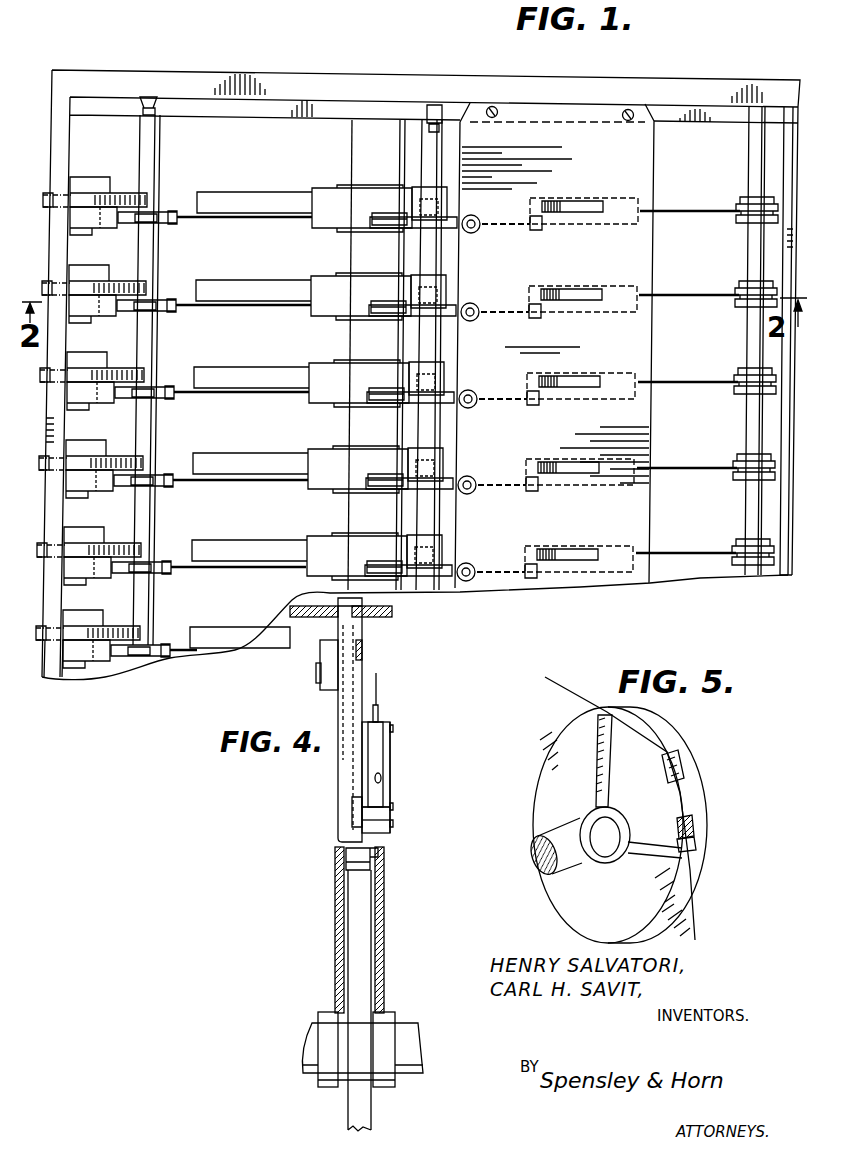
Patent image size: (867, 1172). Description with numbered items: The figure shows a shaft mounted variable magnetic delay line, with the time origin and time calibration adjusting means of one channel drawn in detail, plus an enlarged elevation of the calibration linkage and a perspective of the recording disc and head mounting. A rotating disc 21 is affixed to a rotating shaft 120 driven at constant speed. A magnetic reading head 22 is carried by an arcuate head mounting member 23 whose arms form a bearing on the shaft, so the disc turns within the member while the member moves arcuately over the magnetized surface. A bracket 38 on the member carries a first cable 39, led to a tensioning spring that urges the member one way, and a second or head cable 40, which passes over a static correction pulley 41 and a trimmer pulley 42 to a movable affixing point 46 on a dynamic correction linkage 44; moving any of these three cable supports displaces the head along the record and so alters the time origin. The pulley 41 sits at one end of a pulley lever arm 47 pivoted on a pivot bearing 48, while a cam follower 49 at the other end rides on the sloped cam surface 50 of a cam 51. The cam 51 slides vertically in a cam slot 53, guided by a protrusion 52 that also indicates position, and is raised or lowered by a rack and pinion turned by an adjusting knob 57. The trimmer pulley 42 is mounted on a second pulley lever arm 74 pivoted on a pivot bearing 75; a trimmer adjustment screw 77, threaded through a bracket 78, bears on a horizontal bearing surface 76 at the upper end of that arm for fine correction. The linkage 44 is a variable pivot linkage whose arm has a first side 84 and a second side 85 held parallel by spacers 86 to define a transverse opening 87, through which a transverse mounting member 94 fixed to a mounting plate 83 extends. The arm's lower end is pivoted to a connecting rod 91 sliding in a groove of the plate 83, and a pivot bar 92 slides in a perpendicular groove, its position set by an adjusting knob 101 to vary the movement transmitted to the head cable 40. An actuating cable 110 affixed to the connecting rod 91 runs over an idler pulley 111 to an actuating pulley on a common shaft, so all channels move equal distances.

In FIG. 1, the rotating disc 21 is at (276, 288).
In FIG. 4, the rotating disc 21 is at (360, 946).
In FIG. 5, the rotating disc 21 is at (537, 800).
In FIG. 1, the magnetic reading head 22 is at (440, 292).
In FIG. 4, the magnetic reading head 22 is at (352, 858).
In FIG. 5, the magnetic reading head 22 is at (707, 762).
In FIG. 1, the head mounting member 23 is at (327, 405).
In FIG. 4, the head mounting member 23 is at (385, 884).
In FIG. 5, the head mounting member 23 is at (594, 775).
In FIG. 1, the bracket 38 is at (538, 230).
In FIG. 5, the bracket 38 is at (690, 848).
In FIG. 5, the first cable 39 is at (698, 926).
In FIG. 1, the second cable (head cable) 40 is at (214, 307).
In FIG. 5, the second cable (head cable) 40 is at (577, 700).
In FIG. 1, the static correction pulley 41 is at (176, 395).
In FIG. 1, the trimmer pulley 42 is at (382, 227).
In FIG. 1, the dynamic correction linkage 44 is at (641, 207).
In FIG. 4, the dynamic correction linkage 44 is at (392, 768).
In FIG. 4, the affixing point 46 is at (378, 704).
In FIG. 1, the pulley lever arm 47 is at (165, 476).
In FIG. 1, the pivot bearing 48 is at (154, 519).
In FIG. 1, the cam follower 49 is at (133, 223).
In FIG. 1, the cam surface 50 is at (128, 308).
In FIG. 1, the cam 51 is at (107, 207).
In FIG. 1, the protrusion 52 is at (56, 480).
In FIG. 1, the cam slot 53 is at (50, 648).
In FIG. 1, the adjusting knob 57 is at (46, 205).
In FIG. 1, the pulley lever arm 74 is at (411, 232).
In FIG. 1, the pivot bearing 75 is at (440, 527).
In FIG. 1, the bearing surface 76 is at (473, 219).
In FIG. 1, the trimmer adjustment screw 77 is at (468, 315).
In FIG. 1, the bracket 78 is at (584, 524).
In FIG. 4, the bracket 78 is at (388, 614).
In FIG. 1, the mounting plate 83 is at (615, 292).
In FIG. 4, the first side 84 is at (392, 795).
In FIG. 4, the second side 85 is at (372, 758).
In FIG. 4, the spacers 86 is at (380, 826).
In FIG. 4, the transverse opening 87 is at (382, 780).
In FIG. 4, the first connecting rod 91 is at (348, 820).
In FIG. 4, the pivot bar 92 is at (362, 647).
In FIG. 4, the transverse mounting member 94 is at (380, 722).
In FIG. 1, the adjusting knob 101 is at (592, 373).
In FIG. 4, the adjusting knob 101 is at (362, 601).
In FIG. 1, the actuating cable 110 is at (701, 546).
In FIG. 1, the idler pulley 111 is at (748, 540).
In FIG. 1, the rotating shaft 120 is at (367, 338).
In FIG. 4, the rotating shaft 120 is at (415, 1045).
In FIG. 5, the rotating shaft 120 is at (540, 872).